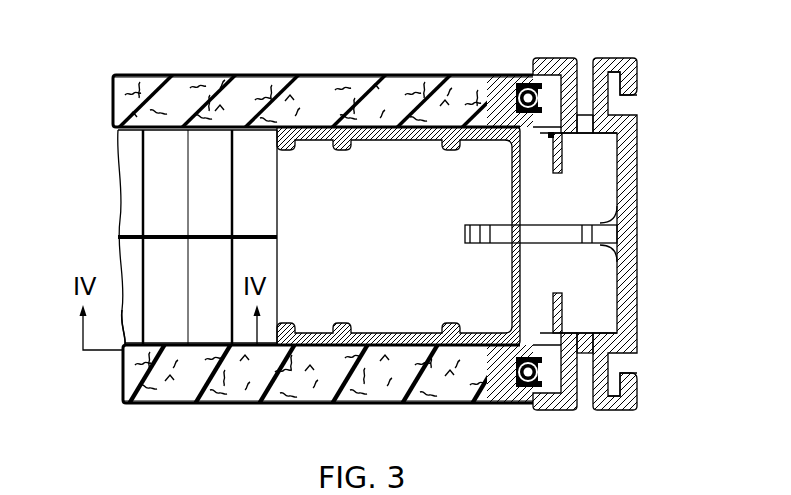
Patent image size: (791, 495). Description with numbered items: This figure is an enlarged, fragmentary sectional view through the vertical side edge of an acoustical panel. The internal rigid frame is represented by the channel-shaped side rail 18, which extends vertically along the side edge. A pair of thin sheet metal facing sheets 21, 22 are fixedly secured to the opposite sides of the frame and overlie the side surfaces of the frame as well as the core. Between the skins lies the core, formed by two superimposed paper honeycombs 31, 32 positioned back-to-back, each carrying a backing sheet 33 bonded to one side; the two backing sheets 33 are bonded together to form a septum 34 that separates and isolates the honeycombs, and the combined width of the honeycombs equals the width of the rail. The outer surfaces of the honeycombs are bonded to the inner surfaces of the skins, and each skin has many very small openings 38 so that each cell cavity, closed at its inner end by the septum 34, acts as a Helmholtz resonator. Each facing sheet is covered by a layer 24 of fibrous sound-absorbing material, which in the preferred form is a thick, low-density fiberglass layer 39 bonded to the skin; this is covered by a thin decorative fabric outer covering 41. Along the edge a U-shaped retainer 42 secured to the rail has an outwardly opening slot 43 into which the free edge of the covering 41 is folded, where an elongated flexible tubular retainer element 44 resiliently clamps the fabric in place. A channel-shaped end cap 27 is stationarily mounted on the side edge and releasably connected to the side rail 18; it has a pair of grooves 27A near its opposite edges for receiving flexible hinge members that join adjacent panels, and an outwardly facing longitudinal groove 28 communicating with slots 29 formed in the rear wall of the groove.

The side rail 18 is at (398, 103).
The facing sheet 21 is at (138, 342).
The facing sheet 22 is at (118, 148).
The layer of fibrous sound-absorbing material 24 is at (113, 75).
The end cap 27 is at (640, 180).
The groove 27A is at (618, 100).
The groove 28 is at (583, 63).
The slot 29 is at (588, 338).
The honeycomb 31 is at (143, 277).
The honeycomb 32 is at (143, 187).
The backing sheet 33 is at (130, 232).
The septum 34 is at (254, 233).
The opening 38 is at (228, 406).
The fiberglass layer 39 is at (266, 75).
The outer covering 41 is at (358, 403).
The U-shaped retainer 42 is at (505, 400).
The slot 43 is at (545, 333).
The retainer element 44 is at (202, 73).